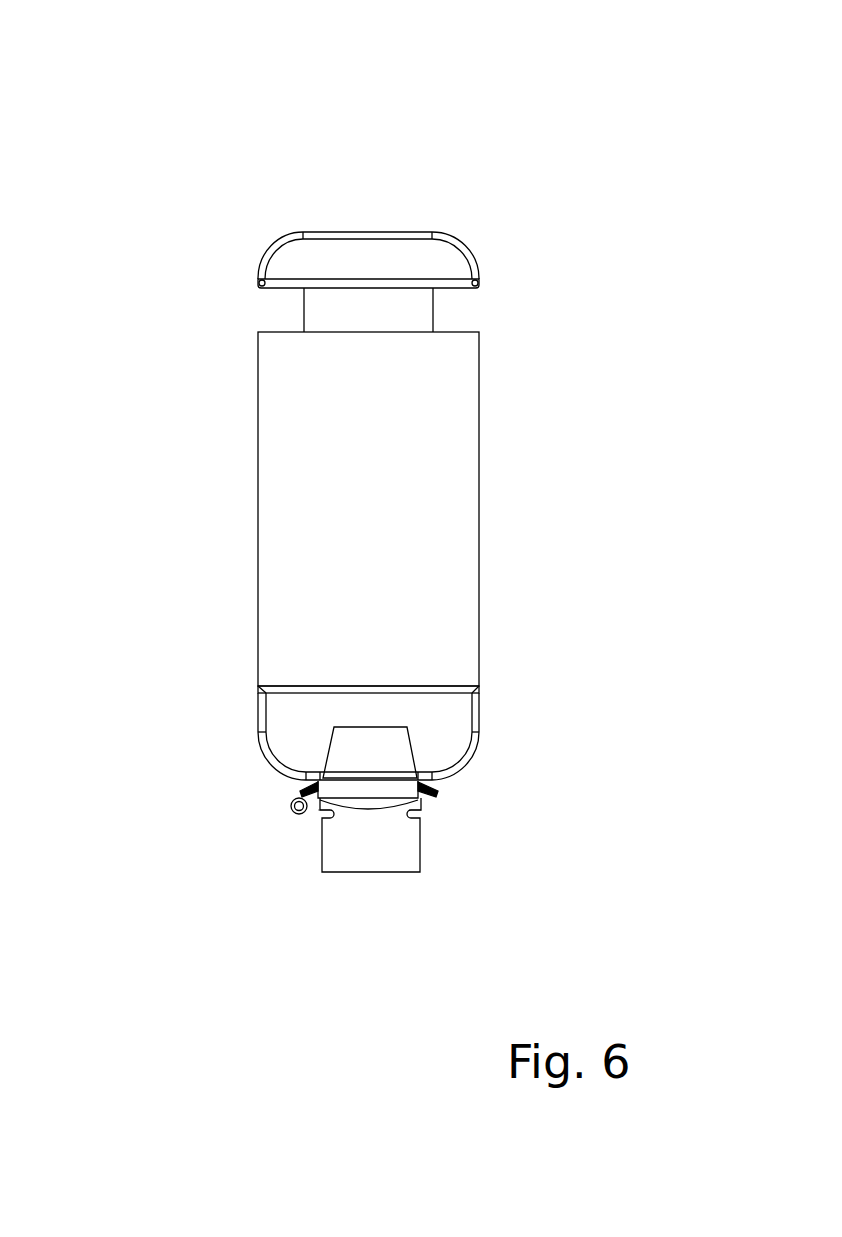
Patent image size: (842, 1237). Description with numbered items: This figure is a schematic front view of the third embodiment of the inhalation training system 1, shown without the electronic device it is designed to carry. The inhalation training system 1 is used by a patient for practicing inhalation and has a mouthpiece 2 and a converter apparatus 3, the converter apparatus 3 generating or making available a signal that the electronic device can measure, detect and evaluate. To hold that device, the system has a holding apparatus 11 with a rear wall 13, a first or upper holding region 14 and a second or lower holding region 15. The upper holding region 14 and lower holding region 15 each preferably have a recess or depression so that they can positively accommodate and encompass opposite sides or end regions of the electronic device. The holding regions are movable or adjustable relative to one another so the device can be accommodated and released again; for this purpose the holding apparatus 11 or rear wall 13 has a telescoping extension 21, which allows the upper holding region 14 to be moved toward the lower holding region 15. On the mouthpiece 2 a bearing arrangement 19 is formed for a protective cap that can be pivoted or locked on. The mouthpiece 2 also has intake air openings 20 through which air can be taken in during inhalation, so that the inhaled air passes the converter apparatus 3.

The inhalation training system 1 is at (531, 152).
The mouthpiece 2 is at (343, 850).
The converter apparatus 3 is at (446, 740).
The holding apparatus 11 is at (492, 452).
The rear wall 13 is at (317, 541).
The upper holding region 14 is at (290, 290).
The lower holding region 15 is at (463, 684).
The bearing arrangement 19 is at (290, 806).
The intake air openings 20 is at (320, 817).
The telescoping extension 21 is at (418, 312).